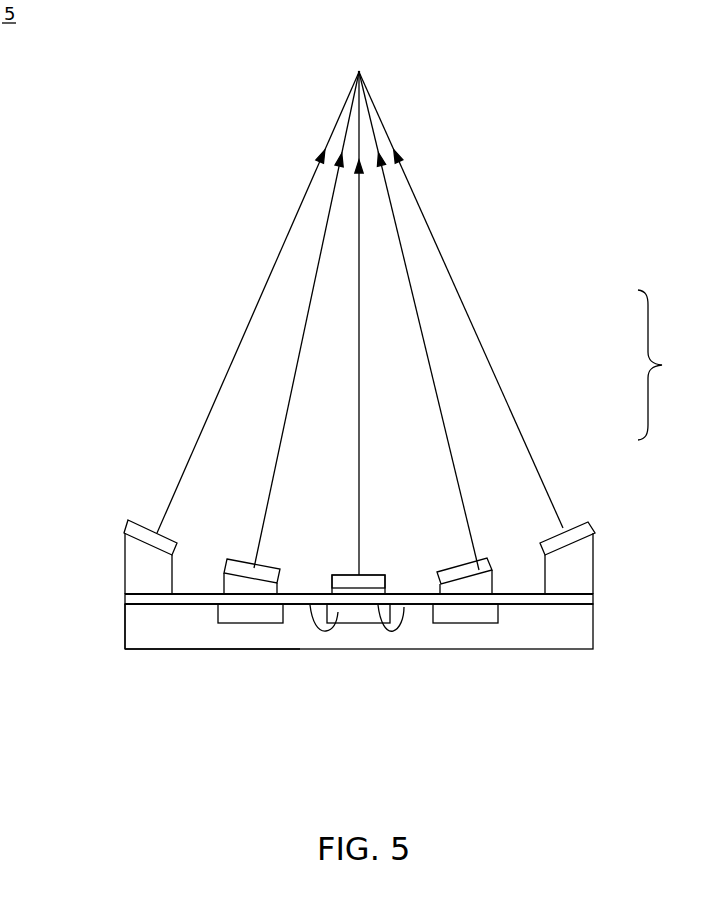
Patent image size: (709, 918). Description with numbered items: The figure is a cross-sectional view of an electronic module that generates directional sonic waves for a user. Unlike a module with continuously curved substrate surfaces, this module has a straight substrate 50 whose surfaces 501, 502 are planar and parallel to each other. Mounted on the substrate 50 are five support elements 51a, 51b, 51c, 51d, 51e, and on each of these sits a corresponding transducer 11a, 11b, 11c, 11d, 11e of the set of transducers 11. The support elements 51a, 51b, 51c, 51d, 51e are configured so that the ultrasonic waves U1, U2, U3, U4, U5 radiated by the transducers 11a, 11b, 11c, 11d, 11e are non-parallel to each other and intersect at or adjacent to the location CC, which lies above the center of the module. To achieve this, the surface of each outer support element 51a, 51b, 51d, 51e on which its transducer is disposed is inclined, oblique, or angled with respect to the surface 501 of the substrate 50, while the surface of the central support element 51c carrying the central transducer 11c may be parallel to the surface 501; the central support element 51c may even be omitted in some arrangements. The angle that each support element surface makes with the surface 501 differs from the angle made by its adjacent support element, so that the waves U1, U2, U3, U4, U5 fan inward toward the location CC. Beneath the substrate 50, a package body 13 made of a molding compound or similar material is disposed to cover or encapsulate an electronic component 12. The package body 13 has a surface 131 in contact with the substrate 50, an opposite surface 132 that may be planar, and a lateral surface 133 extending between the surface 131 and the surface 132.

The location CC is at (358, 56).
The ultrasonic wave U1 is at (296, 210).
The ultrasonic wave U2 is at (312, 280).
The ultrasonic wave U3 is at (358, 343).
The ultrasonic wave U4 is at (408, 279).
The ultrasonic wave U5 is at (420, 209).
The set of transducers 11 is at (668, 365).
The transducer 11a is at (165, 542).
The transducer 11b is at (270, 570).
The transducer 11c is at (344, 580).
The transducer 11d is at (466, 566).
The transducer 11e is at (574, 531).
The electronic component 12 is at (370, 613).
The package body 13 is at (583, 627).
The substrate 50 is at (514, 602).
The surface 501 is at (583, 592).
The surface 502 is at (583, 606).
The surface 131 is at (135, 605).
The surface 132 is at (135, 649).
The lateral surface 133 is at (125, 625).
The support element 51a is at (148, 568).
The support element 51b is at (249, 588).
The support element 51c is at (360, 590).
The support element 51d is at (467, 583).
The support element 51e is at (567, 570).